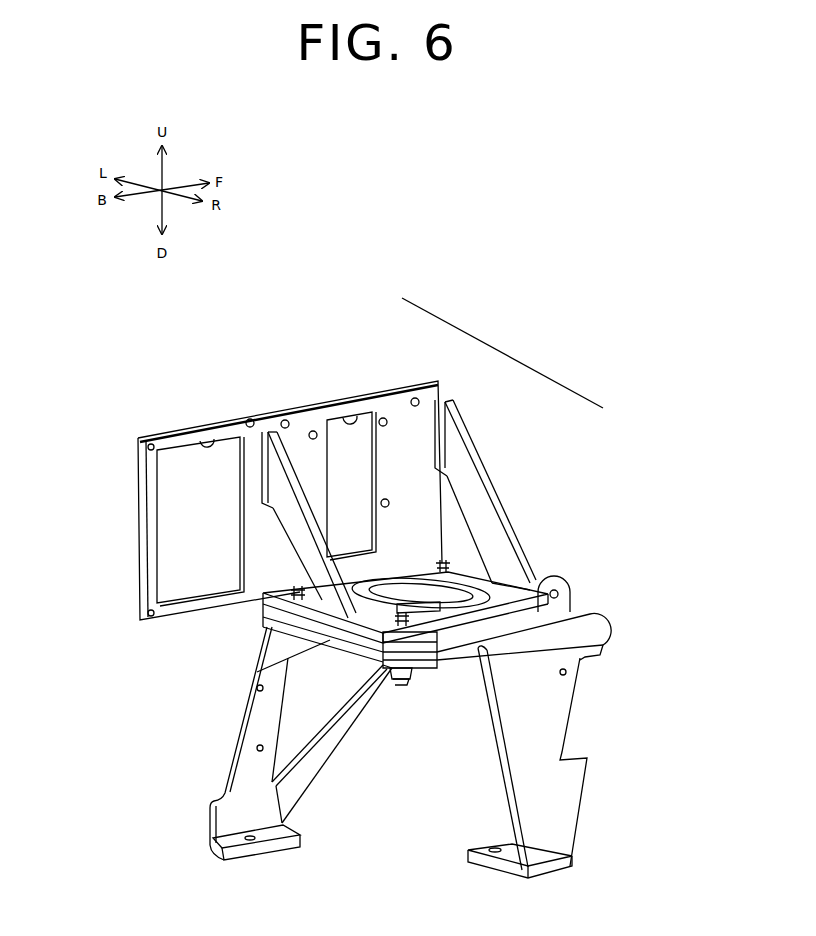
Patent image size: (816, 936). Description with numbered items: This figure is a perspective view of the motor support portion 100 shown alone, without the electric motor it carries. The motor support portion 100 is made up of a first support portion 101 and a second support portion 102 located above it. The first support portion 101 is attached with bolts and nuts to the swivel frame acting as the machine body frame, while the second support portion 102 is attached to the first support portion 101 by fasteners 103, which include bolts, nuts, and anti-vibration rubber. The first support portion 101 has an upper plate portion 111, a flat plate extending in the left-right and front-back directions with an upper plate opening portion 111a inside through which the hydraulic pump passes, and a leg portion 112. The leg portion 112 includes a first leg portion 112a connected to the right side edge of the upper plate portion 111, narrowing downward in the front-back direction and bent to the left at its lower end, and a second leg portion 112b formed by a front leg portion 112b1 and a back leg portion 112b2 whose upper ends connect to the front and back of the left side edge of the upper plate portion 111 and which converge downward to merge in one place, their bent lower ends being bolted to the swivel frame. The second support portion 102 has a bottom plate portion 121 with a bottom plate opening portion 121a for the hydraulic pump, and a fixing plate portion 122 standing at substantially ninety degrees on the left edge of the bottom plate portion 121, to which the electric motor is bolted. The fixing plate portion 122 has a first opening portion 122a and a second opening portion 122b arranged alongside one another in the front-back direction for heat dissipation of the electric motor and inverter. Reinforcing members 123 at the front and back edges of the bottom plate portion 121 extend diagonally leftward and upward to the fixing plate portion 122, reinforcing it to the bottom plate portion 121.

The motor support portion 100 is at (607, 300).
The first support portion 101 is at (185, 815).
The second support portion 102 is at (503, 349).
The fastener 103 is at (393, 686).
The upper plate portion 111 is at (587, 615).
The upper plate opening portion 111a is at (418, 607).
The leg portion 112 is at (260, 725).
The first leg portion 112a is at (527, 762).
The second leg portion 112b is at (301, 743).
The front leg portion 112b1 is at (332, 744).
The back leg portion 112b2 is at (270, 743).
The bottom plate portion 121 is at (510, 612).
The bottom plate opening portion 121a is at (452, 580).
The fixing plate portion 122 is at (400, 435).
The first opening portion 122a is at (350, 420).
The second opening portion 122b is at (207, 440).
The reinforcing member 123 is at (290, 502).